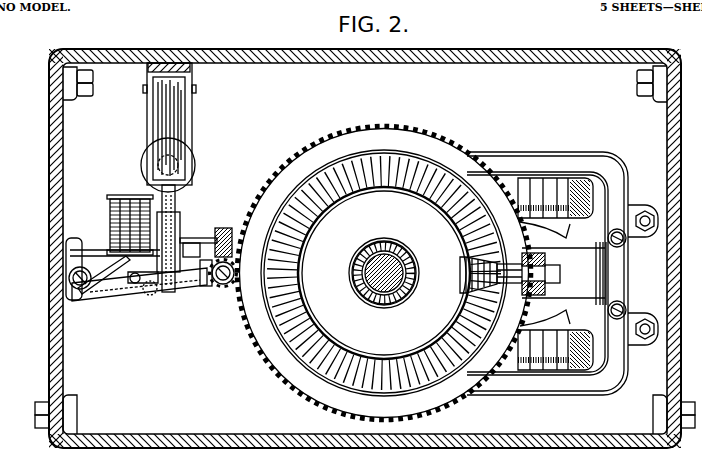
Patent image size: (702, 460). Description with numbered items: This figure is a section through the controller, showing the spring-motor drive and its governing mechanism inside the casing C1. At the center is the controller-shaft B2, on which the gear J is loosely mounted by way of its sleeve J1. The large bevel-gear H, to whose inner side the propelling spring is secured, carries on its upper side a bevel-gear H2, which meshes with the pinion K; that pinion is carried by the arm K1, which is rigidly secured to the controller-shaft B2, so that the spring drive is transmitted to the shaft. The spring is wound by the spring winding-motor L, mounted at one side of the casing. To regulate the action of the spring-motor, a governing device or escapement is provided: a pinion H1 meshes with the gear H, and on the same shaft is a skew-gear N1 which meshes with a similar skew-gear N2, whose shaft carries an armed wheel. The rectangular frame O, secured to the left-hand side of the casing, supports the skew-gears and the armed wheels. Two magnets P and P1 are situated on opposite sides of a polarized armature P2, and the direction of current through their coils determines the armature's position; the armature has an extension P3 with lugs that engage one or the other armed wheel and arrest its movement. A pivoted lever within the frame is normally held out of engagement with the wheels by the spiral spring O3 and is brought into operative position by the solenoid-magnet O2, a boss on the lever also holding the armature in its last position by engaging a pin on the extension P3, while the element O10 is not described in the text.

The casing C1 is at (433, 63).
The polarized armature P2 is at (170, 117).
The magnet P is at (196, 163).
The armature extension P3 is at (176, 206).
The solenoid-magnet O2 is at (126, 212).
The skew-gear N2 is at (222, 230).
The spiral spring O3 is at (70, 280).
The rectangular frame O is at (188, 292).
The lever arm O10 is at (116, 290).
The magnet P1 is at (160, 292).
The skew-gear N1 is at (223, 296).
The pinion H1 is at (208, 300).
The bevel-gear H is at (272, 357).
The bevel-gear H2 is at (343, 354).
The sleeve J1 is at (355, 272).
The controller-shaft B2 is at (382, 257).
The pinion K is at (461, 256).
The arm K1 is at (568, 258).
The spring winding-motor L is at (567, 162).